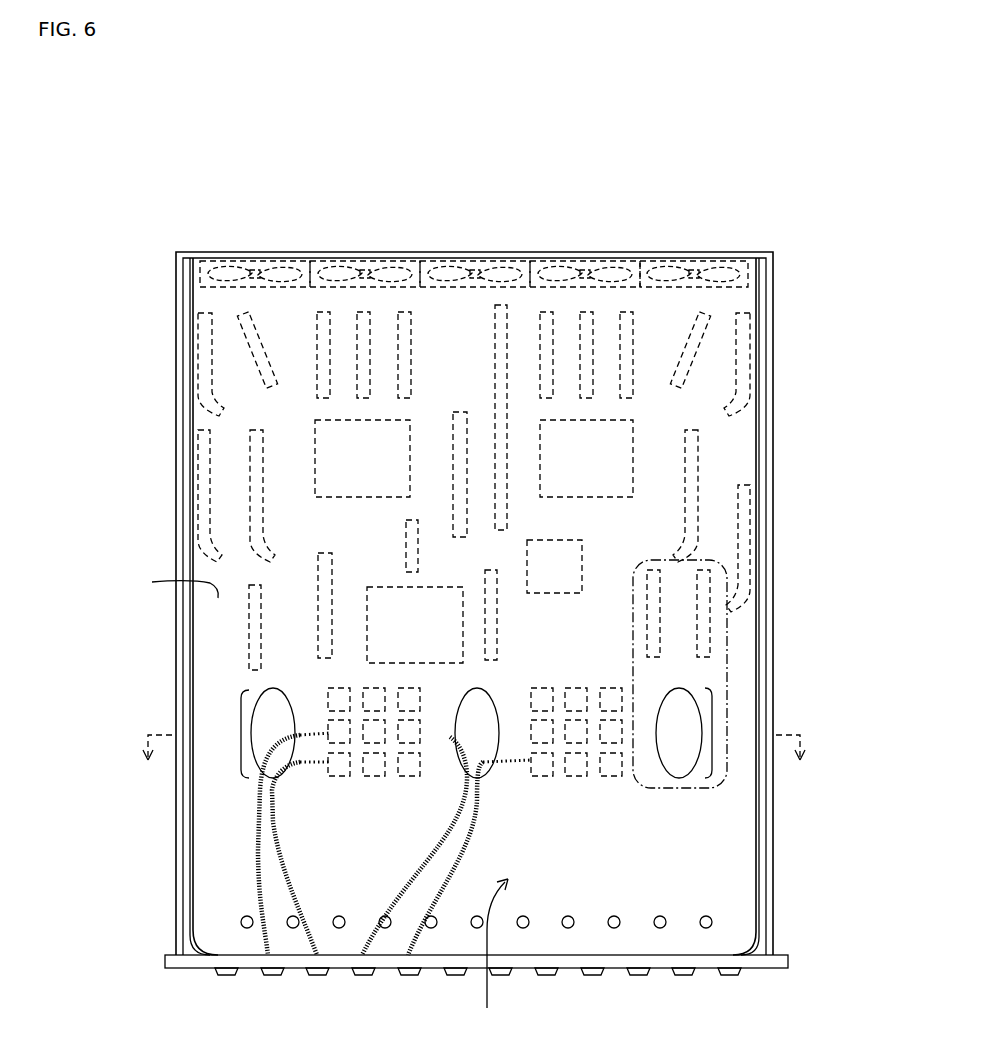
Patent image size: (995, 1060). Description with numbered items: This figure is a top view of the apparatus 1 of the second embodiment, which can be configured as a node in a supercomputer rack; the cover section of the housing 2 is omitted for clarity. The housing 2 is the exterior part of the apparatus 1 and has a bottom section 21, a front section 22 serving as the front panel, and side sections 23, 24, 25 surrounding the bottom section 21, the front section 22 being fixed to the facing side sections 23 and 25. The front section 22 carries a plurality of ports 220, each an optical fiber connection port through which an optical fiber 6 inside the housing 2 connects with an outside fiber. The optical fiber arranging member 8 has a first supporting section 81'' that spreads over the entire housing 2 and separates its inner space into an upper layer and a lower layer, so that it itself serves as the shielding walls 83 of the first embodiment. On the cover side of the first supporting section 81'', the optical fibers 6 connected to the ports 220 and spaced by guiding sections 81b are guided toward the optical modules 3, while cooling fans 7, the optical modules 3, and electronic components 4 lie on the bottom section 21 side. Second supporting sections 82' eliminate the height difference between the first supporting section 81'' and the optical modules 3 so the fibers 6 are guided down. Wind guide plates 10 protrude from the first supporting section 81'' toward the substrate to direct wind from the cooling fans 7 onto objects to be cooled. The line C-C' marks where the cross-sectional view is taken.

The apparatus 1 is at (790, 186).
The housing 2 is at (776, 488).
The optical modules 3 is at (348, 778).
The electronic components 4 is at (350, 497).
The optical fibers 6 is at (258, 855).
The cooling fans 7 is at (371, 262).
The optical fiber arranging member 8 is at (492, 955).
The wind guide plates 10 is at (197, 342).
The bottom section 21 is at (763, 932).
The front section 22 is at (783, 970).
The side section 23 is at (776, 851).
The side section 24 is at (488, 262).
The side section 25 is at (178, 800).
The guiding sections 81b is at (338, 928).
The first supporting section 81'' is at (142, 606).
The second supporting sections 82' is at (475, 713).
The shielding walls 83 is at (210, 583).
The ports 220 is at (729, 976).
The line C-C' C is at (157, 734).
The line C- C' is at (792, 734).